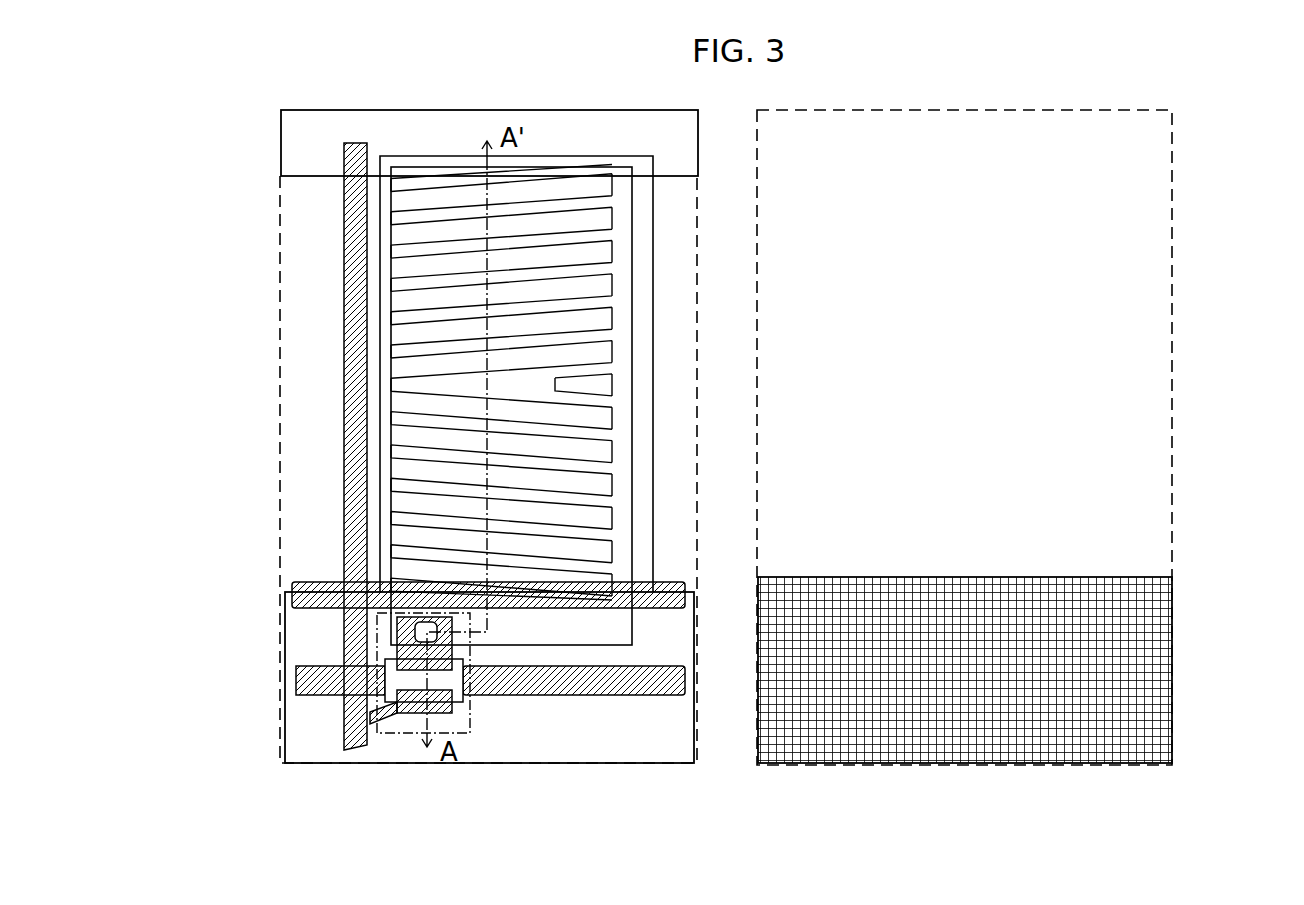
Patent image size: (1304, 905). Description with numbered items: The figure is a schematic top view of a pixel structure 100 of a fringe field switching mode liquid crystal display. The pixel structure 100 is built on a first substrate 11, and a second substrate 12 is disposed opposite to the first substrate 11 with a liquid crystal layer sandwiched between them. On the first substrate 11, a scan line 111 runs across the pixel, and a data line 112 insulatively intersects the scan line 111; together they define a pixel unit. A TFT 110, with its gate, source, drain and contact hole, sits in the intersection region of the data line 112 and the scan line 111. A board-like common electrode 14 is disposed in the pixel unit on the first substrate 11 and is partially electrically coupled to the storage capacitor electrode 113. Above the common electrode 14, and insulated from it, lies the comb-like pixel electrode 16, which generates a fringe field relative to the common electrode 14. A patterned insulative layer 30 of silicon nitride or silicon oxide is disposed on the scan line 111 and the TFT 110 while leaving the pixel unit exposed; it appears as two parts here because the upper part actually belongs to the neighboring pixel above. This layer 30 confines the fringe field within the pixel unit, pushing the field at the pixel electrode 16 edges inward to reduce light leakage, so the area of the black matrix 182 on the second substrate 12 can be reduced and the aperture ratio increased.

The pixel structure 100 is at (201, 101).
The first substrate 11 is at (283, 228).
The second substrate 12 is at (1172, 270).
The common electrode 14 is at (643, 268).
The pixel electrode 16 is at (623, 191).
The patterned insulative layer 30 is at (313, 178).
The TFT 110 is at (398, 737).
The scan line 111 is at (305, 683).
The data line 112 is at (345, 382).
The storage capacitor electrode 113 is at (305, 603).
The black matrix 182 is at (1130, 633).